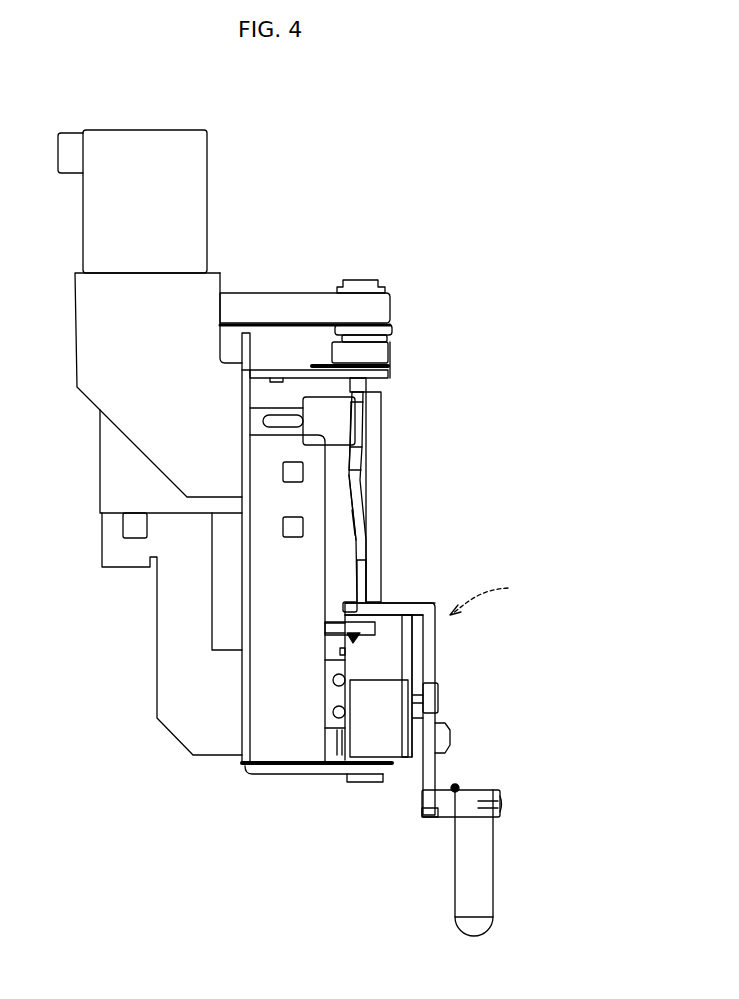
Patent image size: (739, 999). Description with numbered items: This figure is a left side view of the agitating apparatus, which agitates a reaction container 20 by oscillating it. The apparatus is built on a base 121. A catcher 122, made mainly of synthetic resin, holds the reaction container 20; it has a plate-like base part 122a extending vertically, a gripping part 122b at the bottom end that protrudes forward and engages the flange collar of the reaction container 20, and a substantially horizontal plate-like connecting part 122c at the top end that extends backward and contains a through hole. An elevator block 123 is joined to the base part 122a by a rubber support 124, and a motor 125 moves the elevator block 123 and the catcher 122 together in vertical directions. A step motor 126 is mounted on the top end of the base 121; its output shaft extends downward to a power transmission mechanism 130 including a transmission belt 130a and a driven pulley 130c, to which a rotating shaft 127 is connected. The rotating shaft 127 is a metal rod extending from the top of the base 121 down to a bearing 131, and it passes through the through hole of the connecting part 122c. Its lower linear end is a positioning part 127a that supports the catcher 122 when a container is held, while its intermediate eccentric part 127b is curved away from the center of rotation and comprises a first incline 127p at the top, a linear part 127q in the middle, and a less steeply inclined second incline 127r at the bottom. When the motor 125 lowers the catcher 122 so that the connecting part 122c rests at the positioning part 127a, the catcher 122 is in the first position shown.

The reaction container 20 is at (495, 887).
The base 121 is at (157, 688).
The catcher 122 is at (480, 672).
The base part 122a is at (437, 668).
The gripping part 122b is at (480, 787).
The connecting part 122c is at (405, 602).
The elevator block 123 is at (398, 758).
The rubber support 124 is at (415, 758).
The motor 125 is at (96, 455).
The motor 126 is at (210, 198).
The rotating shaft 127 is at (411, 492).
The positioning part 127a is at (367, 562).
The eccentric part 127b is at (362, 472).
The first incline 127p is at (380, 408).
The linear part 127q is at (357, 448).
The second incline 127r is at (366, 533).
The power transmission mechanism 130 is at (392, 307).
The transmission belt 130a is at (300, 293).
The driven pulley 130c is at (386, 289).
The bearing 131 is at (346, 612).